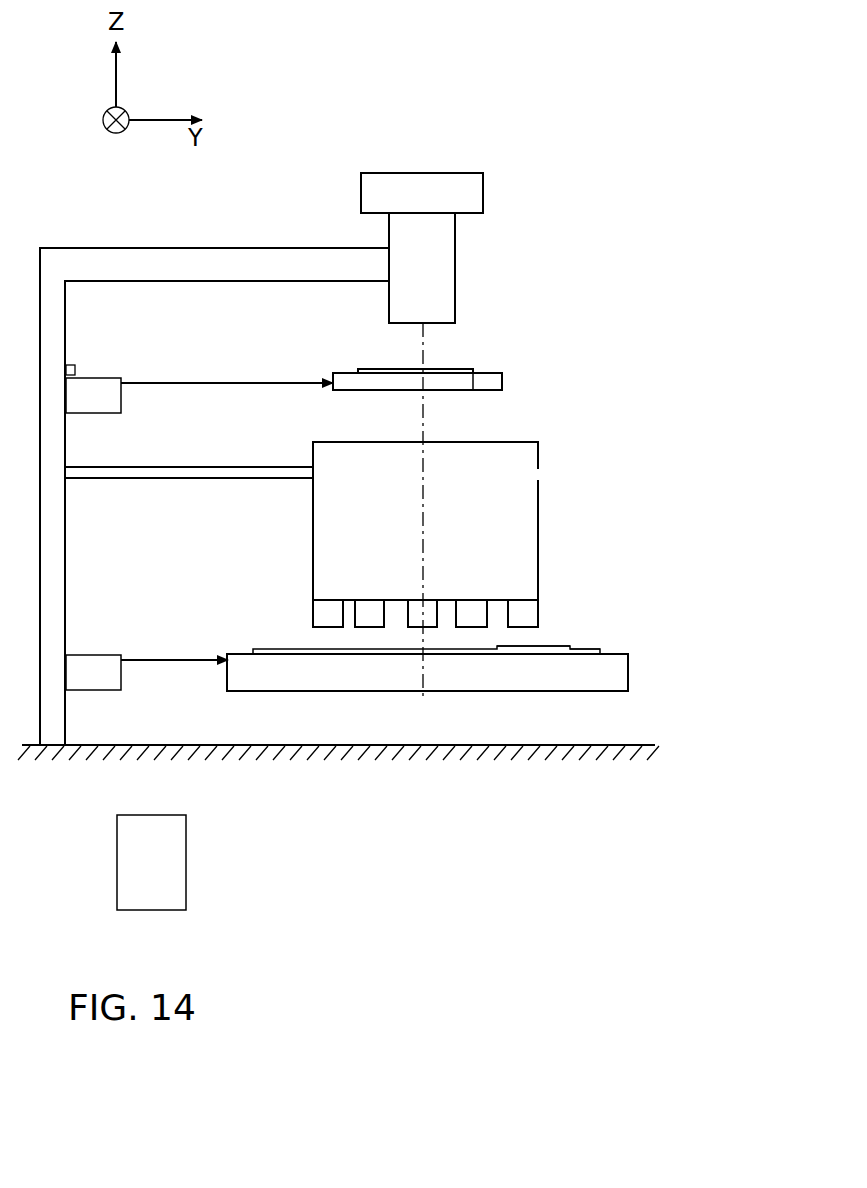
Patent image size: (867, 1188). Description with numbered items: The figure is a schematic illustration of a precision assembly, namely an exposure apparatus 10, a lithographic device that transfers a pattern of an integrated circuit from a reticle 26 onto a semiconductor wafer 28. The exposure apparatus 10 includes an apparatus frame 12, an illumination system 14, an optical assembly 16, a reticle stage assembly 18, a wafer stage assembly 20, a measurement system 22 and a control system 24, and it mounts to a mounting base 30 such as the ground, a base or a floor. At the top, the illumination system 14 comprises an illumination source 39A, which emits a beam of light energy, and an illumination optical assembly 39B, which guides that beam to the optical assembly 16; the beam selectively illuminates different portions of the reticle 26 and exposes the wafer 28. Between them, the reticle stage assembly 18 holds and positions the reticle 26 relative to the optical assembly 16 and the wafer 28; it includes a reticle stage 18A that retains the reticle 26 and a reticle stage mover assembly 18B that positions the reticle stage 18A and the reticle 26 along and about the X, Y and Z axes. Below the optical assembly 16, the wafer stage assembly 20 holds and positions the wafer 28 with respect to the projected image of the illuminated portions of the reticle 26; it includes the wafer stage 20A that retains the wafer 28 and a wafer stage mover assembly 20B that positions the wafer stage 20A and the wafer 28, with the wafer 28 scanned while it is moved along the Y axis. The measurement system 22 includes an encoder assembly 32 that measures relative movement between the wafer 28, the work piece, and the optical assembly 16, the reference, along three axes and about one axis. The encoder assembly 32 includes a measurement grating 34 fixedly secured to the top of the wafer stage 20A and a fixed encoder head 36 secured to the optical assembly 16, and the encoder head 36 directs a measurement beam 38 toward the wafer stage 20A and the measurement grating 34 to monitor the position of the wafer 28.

The exposure apparatus 10 is at (606, 228).
The apparatus frame 12 is at (65, 441).
The illumination system 14 is at (484, 212).
The optical assembly 16 is at (454, 534).
The reticle stage assembly 18 is at (478, 359).
The reticle stage 18A is at (503, 383).
The reticle stage mover assembly 18B is at (199, 389).
The wafer stage assembly 20 is at (469, 677).
The wafer stage 20A is at (528, 680).
The wafer stage mover assembly 20B is at (147, 672).
The measurement system 22 is at (313, 612).
The control system 24 is at (151, 862).
The reticle 26 is at (445, 375).
The semiconductor wafer 28 is at (253, 652).
The mounting base 30 is at (607, 762).
The encoder assembly 32 is at (563, 612).
The measurement grating 34 is at (560, 648).
The encoder head 36 is at (436, 607).
The measurement beam 38 is at (524, 647).
The illumination source 39A is at (435, 183).
The illumination optical assembly 39B is at (470, 253).